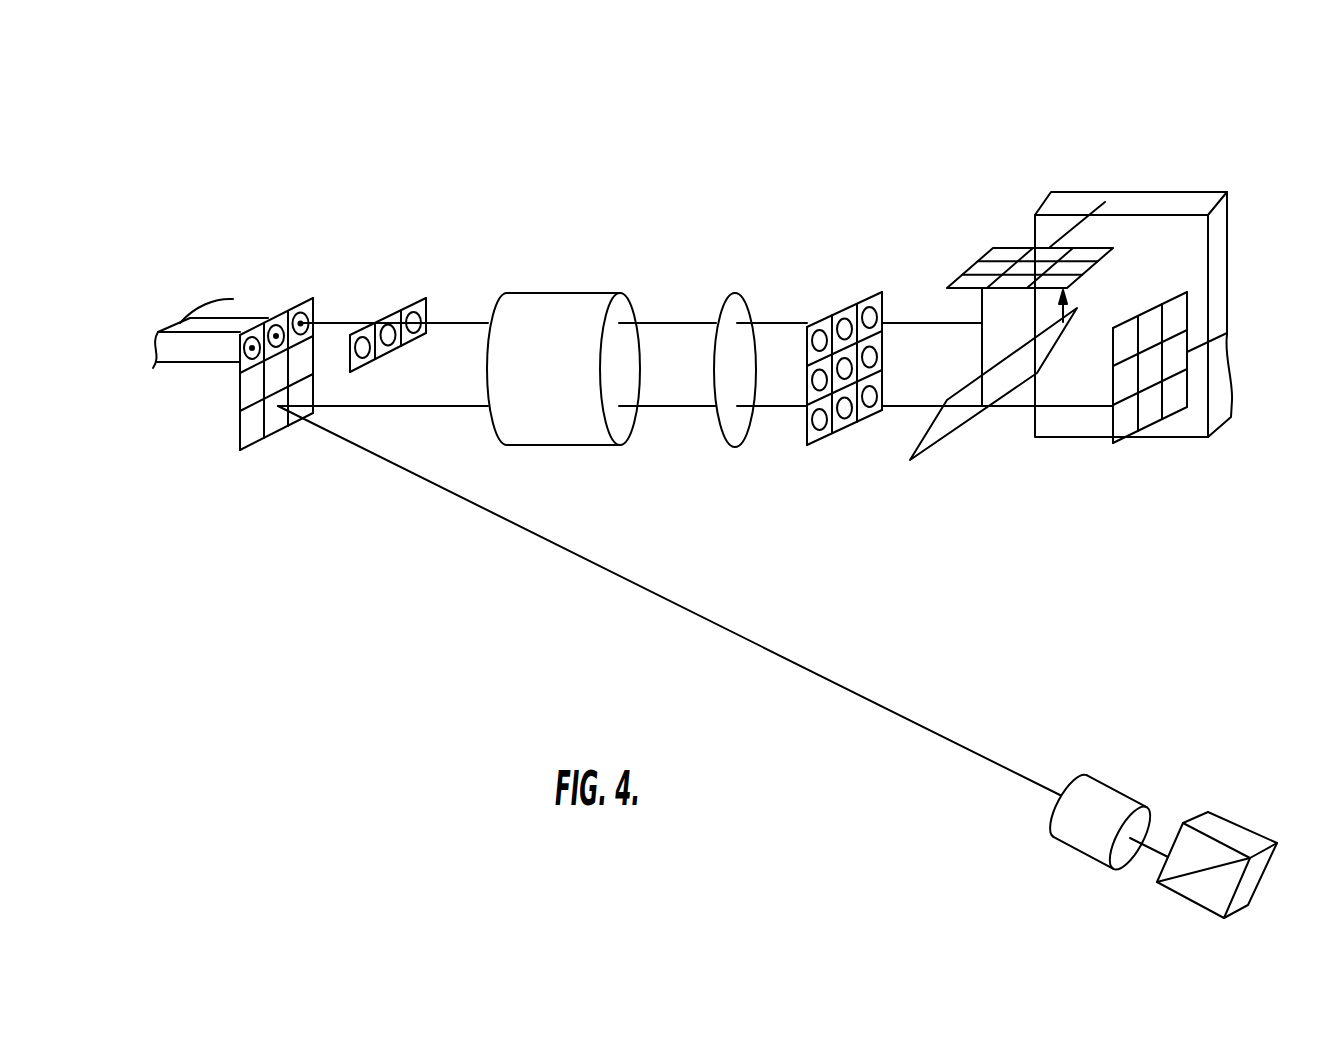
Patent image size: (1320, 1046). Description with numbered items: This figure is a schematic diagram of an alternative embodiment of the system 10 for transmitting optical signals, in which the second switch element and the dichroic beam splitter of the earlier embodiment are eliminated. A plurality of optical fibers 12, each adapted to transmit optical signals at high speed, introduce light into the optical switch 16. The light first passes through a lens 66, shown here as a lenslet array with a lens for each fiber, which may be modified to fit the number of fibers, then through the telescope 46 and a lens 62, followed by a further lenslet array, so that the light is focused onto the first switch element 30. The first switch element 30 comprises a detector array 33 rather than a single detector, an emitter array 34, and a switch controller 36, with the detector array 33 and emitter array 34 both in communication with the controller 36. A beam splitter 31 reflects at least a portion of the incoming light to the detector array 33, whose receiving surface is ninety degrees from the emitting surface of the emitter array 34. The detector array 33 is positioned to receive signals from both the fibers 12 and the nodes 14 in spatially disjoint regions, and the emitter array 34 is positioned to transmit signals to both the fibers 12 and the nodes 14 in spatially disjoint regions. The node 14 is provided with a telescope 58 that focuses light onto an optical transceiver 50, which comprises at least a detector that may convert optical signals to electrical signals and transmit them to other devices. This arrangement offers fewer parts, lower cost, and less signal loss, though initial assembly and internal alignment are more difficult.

The system for transmitting optical signals 10 is at (385, 158).
The optical fiber 12 is at (242, 305).
The node 14 is at (796, 662).
The optical switch 16 is at (890, 146).
The first switch element 30 is at (1098, 300).
The beam splitter 31 is at (927, 440).
The detector array 33 is at (998, 255).
The emitter array 34 is at (1120, 428).
The switch controller 36 is at (1220, 228).
The telescope 46 is at (546, 293).
The optical transceiver 50 is at (1238, 833).
The telescope 58 is at (1110, 788).
The lens 62 is at (737, 293).
The lens 66 is at (414, 302).